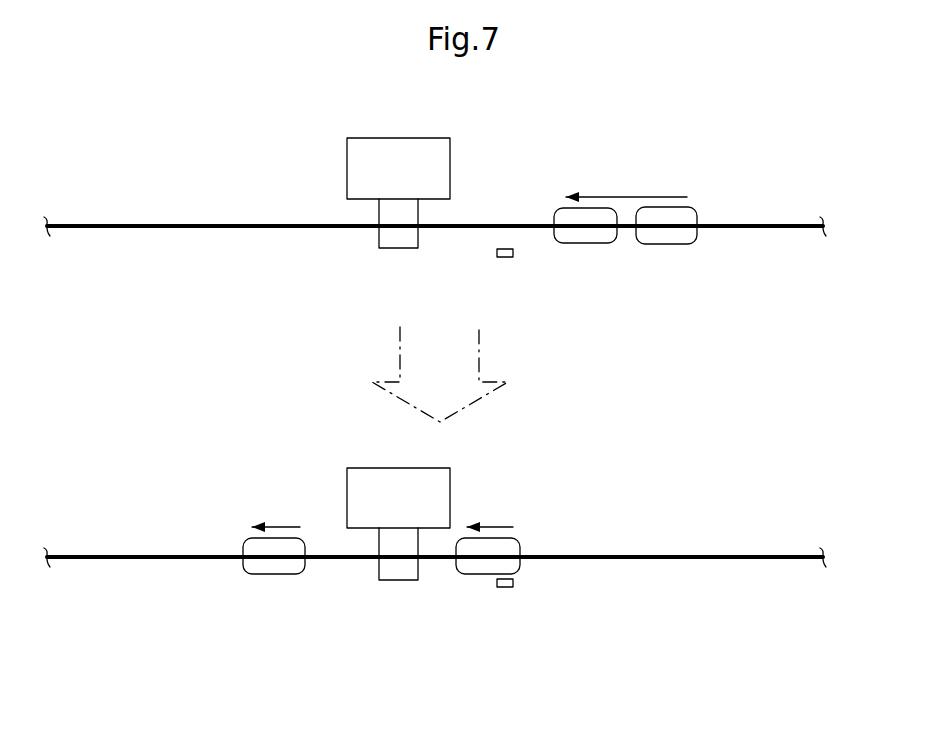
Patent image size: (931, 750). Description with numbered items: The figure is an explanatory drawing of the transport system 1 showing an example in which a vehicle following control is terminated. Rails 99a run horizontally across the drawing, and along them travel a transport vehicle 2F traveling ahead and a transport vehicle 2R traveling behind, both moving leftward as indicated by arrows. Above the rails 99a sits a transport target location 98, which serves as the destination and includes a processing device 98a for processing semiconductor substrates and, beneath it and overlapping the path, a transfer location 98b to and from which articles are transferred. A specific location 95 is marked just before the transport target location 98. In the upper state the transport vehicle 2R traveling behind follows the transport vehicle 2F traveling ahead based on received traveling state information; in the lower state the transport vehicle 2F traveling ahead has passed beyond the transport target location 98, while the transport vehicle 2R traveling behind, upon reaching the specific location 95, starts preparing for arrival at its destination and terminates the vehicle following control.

The rails 99a is at (214, 224).
The processing device 98a is at (362, 151).
The transfer location 98b is at (388, 242).
The transport target location 98 is at (463, 166).
The transport system 1 is at (735, 146).
The specific location 95 is at (513, 257).
The transport vehicle traveling ahead 2F is at (597, 245).
The transport vehicle traveling behind 2R is at (676, 245).